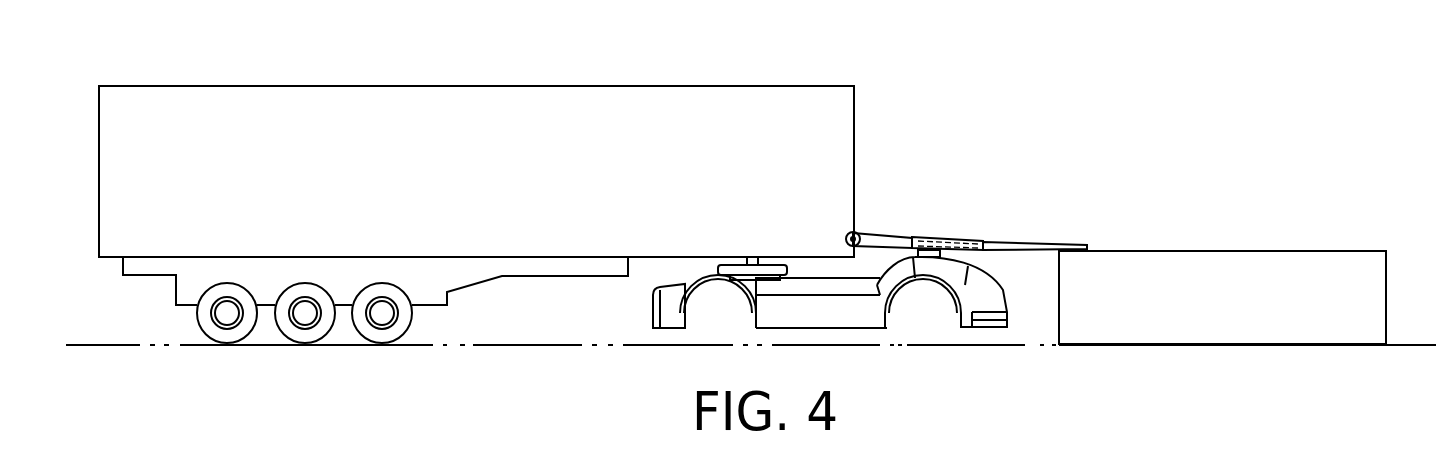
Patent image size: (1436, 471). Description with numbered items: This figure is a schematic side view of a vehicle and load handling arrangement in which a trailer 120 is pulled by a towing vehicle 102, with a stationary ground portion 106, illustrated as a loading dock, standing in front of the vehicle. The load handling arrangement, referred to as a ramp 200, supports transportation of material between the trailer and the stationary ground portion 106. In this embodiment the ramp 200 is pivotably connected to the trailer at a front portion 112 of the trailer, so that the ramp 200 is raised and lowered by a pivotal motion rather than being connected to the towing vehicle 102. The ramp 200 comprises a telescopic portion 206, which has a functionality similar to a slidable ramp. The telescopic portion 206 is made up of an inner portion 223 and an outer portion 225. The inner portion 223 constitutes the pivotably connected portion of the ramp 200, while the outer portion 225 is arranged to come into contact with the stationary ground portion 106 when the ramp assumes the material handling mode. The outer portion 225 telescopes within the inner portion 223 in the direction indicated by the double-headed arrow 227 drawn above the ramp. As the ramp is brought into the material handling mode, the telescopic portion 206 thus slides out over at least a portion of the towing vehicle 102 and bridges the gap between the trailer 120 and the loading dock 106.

The trailer 120 is at (733, 133).
The towing vehicle 102 is at (977, 295).
The stationary ground portion 106 is at (1172, 302).
The front portion 112 is at (862, 250).
The ramp 200 is at (973, 180).
The telescopic portion 206 is at (973, 180).
The inner portion 223 is at (880, 240).
The outer portion 225 is at (992, 228).
The arrow 227 is at (910, 221).